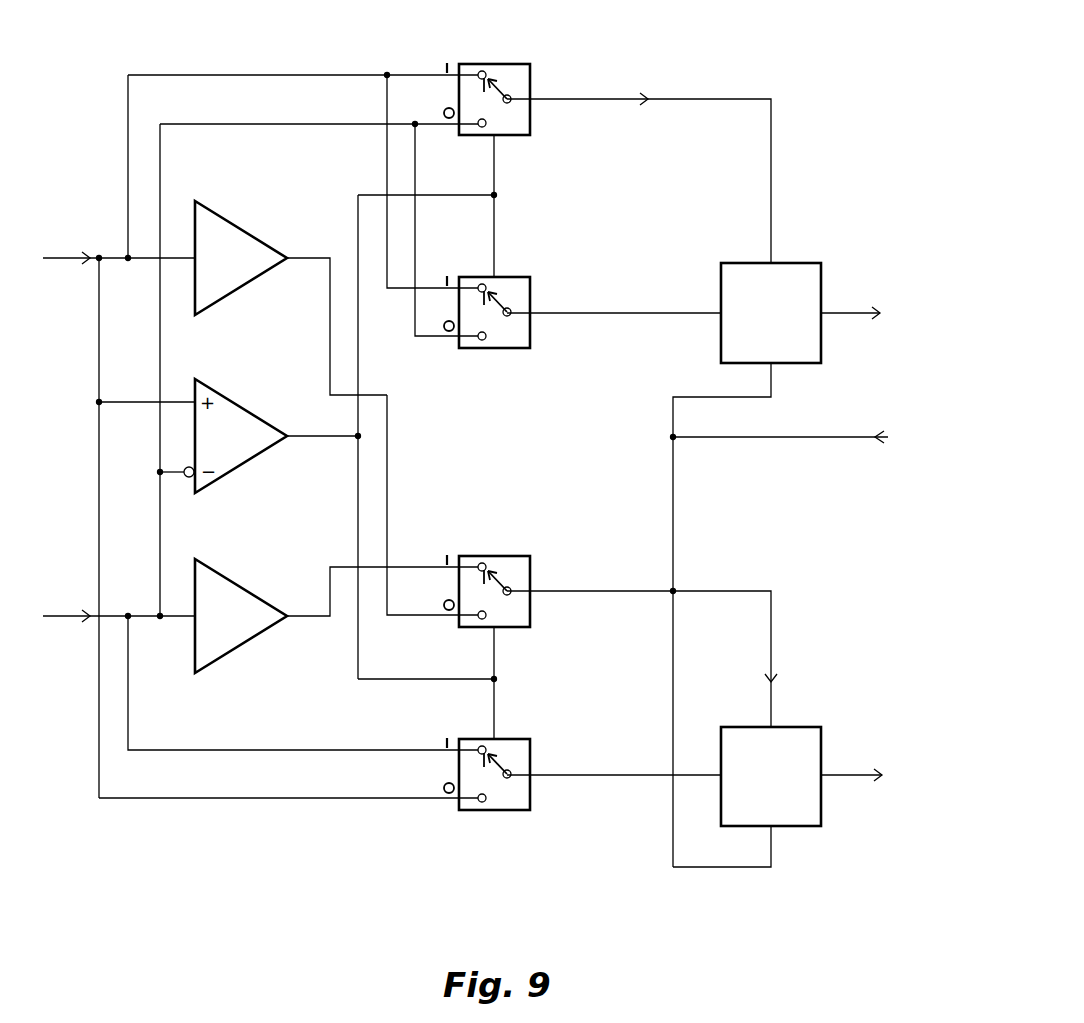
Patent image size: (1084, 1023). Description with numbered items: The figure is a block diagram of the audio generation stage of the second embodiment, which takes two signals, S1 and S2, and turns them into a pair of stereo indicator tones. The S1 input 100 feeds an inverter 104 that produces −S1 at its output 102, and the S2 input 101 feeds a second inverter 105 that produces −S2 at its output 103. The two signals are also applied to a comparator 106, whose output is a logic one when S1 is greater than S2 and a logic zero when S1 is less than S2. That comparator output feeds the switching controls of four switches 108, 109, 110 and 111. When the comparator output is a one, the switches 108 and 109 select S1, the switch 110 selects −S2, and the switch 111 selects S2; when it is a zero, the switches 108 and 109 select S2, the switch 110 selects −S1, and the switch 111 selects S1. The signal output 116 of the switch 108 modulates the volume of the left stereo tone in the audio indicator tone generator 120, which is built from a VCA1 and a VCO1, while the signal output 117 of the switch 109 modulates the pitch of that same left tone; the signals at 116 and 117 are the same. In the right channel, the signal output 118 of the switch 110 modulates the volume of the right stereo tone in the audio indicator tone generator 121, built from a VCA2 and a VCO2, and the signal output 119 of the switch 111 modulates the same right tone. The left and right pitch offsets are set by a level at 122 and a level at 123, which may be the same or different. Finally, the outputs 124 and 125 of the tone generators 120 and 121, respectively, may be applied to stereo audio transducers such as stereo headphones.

The S1 input 100 is at (119, 258).
The S2 input 101 is at (119, 616).
The output of inverter 104 102 is at (303, 257).
The output of inverter 105 103 is at (305, 614).
The inverter 104 is at (233, 227).
The inverter 105 is at (233, 577).
The comparator 106 is at (344, 437).
The switch 108 is at (498, 64).
The switch 109 is at (503, 277).
The switch 110 is at (520, 556).
The switch 111 is at (503, 810).
The signal output of switch 108 116 is at (630, 103).
The signal output of switch 109 117 is at (613, 315).
The signal output of switch 110 118 is at (595, 593).
The signal output of switch 111 119 is at (593, 777).
The audio indicator tone generator (VCA1 and VCO1) 120 is at (771, 313).
The audio indicator tone generator (VCA2 and VCO2) 121 is at (771, 776).
The left pitch offset level 122 is at (775, 388).
The right pitch offset level 123 is at (773, 856).
The output of tone generator 120 124 is at (843, 313).
The output of tone generator 121 125 is at (843, 775).